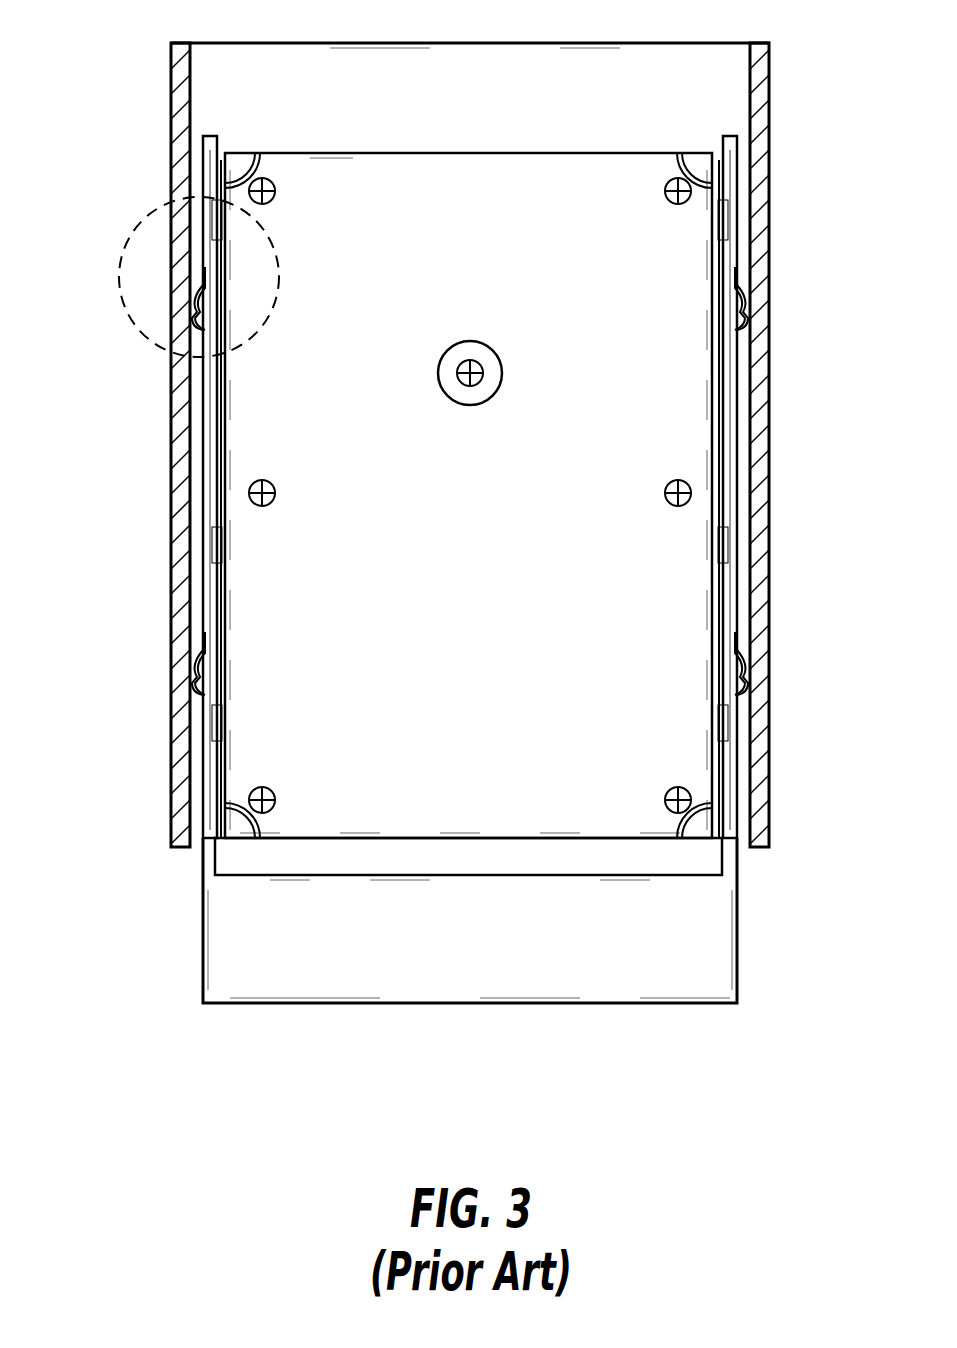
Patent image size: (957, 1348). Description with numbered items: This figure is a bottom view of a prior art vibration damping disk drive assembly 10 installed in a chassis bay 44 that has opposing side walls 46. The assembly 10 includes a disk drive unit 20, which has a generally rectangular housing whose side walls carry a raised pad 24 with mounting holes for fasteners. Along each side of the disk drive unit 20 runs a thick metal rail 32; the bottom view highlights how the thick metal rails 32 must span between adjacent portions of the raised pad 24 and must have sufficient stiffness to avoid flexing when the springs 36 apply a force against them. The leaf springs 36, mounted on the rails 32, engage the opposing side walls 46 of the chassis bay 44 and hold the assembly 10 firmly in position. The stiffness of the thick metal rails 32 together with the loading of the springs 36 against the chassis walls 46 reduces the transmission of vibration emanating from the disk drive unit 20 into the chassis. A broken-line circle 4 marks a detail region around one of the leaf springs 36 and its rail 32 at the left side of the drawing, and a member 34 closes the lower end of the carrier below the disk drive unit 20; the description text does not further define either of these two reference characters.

The disk drive assembly 10 is at (255, 1048).
The disk drive unit 20 is at (468, 495).
The raised pad 24 is at (225, 230).
The thick metal rails 32 is at (210, 478).
The bottom tray 34 is at (527, 983).
The leaf springs 36 is at (200, 286).
The detail region 4 is at (122, 230).
The chassis bay 44 is at (485, 43).
The side walls 46 is at (171, 104).